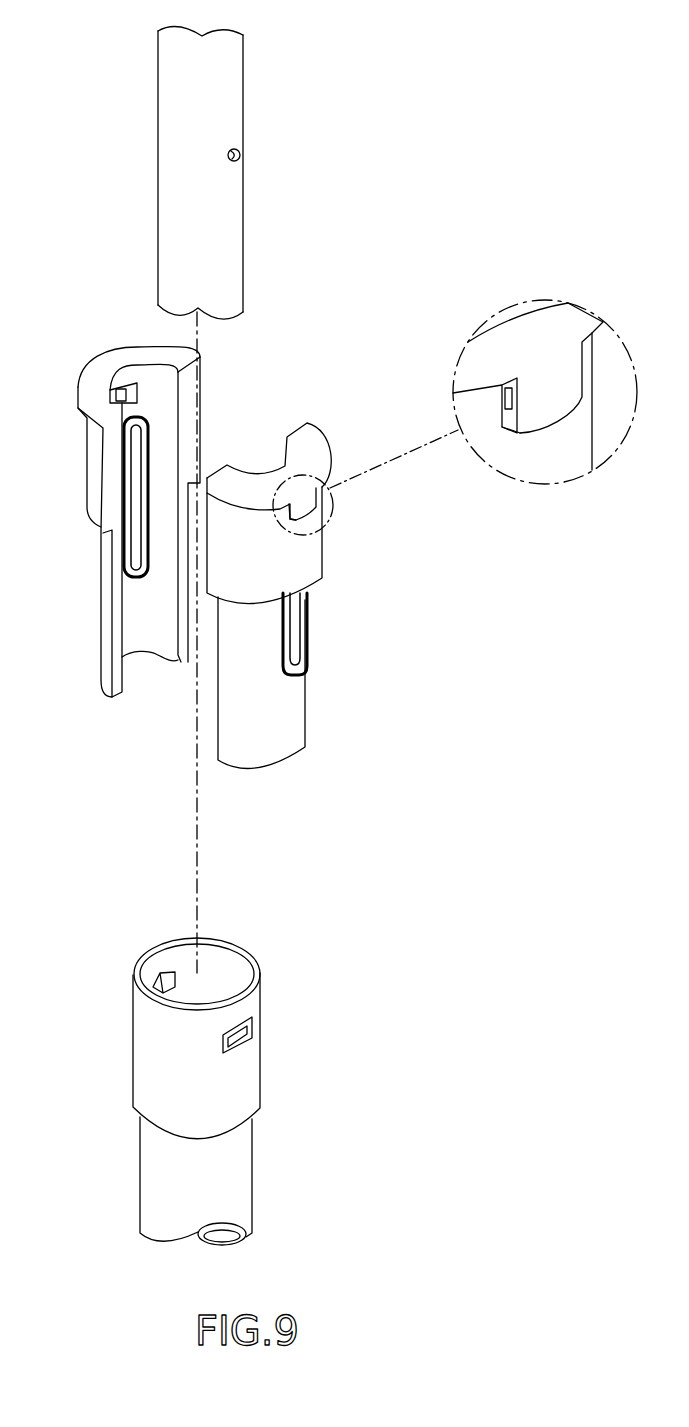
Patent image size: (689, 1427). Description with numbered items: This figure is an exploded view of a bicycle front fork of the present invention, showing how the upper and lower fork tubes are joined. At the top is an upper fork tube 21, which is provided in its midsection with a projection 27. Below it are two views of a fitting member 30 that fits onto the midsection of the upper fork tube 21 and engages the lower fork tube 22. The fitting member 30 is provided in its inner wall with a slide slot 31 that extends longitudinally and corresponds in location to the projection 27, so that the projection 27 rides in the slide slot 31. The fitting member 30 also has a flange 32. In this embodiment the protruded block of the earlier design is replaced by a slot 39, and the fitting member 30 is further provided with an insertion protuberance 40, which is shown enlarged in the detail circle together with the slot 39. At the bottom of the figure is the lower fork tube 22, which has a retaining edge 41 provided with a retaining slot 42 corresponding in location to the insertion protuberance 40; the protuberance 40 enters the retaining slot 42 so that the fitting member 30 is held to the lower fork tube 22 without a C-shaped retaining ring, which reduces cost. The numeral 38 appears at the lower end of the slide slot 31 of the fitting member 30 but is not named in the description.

The upper fork tube 21 is at (230, 72).
The projection 27 is at (243, 160).
The fitting member 30 is at (103, 643).
The slide slot 31 is at (125, 542).
The flange 32 is at (88, 413).
The slot end 38 is at (307, 670).
The slot 39 is at (127, 390).
The insertion protuberance 40 is at (117, 385).
The retaining edge 41 is at (248, 1000).
The retaining slot 42 is at (242, 1042).
The lower fork tube 22 is at (158, 1150).